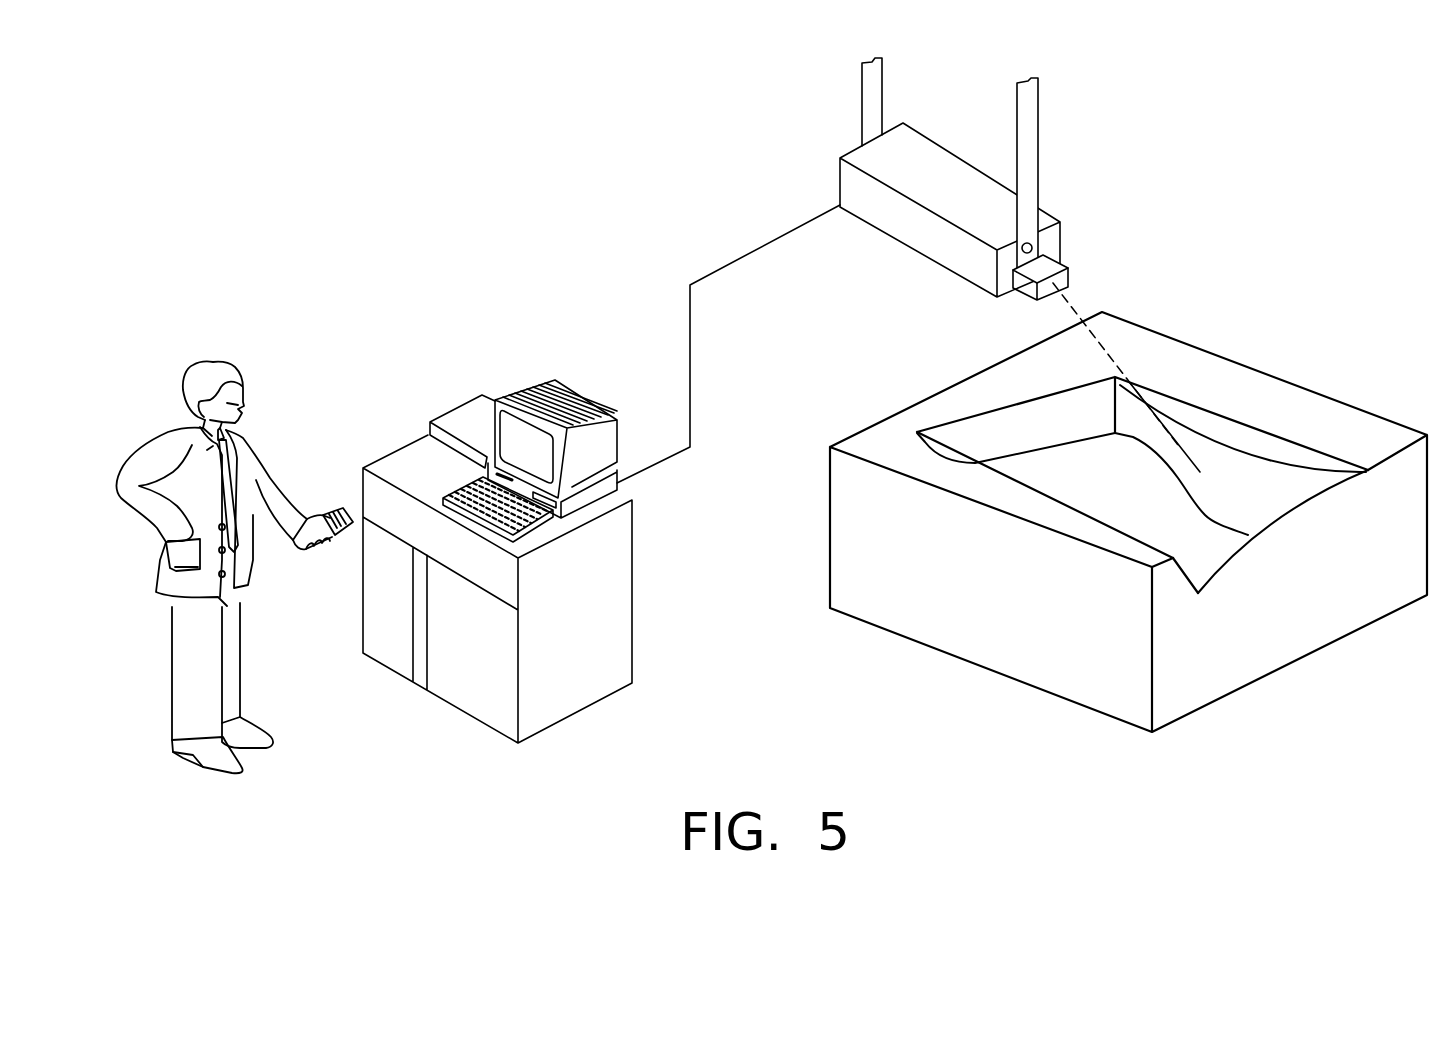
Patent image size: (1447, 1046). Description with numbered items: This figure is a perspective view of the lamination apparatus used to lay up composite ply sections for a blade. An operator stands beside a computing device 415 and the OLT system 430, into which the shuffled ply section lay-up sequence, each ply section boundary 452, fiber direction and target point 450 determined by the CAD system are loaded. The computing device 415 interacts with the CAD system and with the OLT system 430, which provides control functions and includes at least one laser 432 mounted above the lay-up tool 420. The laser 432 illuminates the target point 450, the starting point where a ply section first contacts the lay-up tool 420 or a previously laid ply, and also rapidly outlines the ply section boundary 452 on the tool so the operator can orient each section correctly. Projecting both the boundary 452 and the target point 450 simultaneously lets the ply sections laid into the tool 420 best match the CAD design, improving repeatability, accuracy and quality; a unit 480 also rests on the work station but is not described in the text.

The computing device 415 is at (615, 486).
The lay-up tool 420 is at (1003, 591).
The OLT system 430 is at (507, 398).
The laser 432 is at (932, 248).
The target point 450 is at (1270, 497).
The ply section boundary 452 is at (1192, 450).
The controller box 480 is at (457, 413).